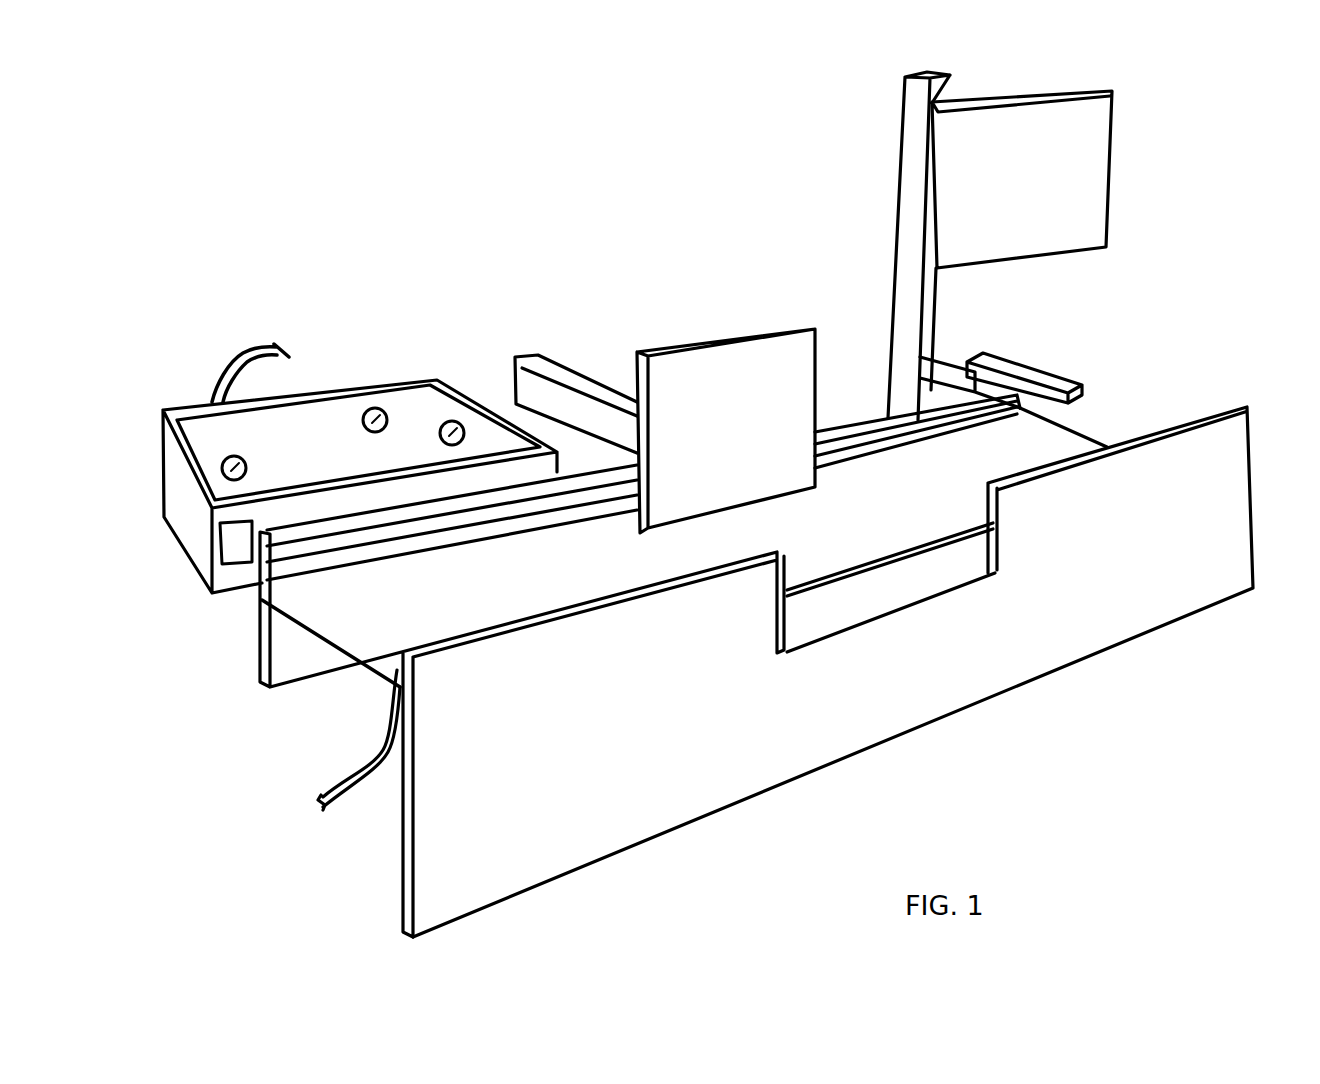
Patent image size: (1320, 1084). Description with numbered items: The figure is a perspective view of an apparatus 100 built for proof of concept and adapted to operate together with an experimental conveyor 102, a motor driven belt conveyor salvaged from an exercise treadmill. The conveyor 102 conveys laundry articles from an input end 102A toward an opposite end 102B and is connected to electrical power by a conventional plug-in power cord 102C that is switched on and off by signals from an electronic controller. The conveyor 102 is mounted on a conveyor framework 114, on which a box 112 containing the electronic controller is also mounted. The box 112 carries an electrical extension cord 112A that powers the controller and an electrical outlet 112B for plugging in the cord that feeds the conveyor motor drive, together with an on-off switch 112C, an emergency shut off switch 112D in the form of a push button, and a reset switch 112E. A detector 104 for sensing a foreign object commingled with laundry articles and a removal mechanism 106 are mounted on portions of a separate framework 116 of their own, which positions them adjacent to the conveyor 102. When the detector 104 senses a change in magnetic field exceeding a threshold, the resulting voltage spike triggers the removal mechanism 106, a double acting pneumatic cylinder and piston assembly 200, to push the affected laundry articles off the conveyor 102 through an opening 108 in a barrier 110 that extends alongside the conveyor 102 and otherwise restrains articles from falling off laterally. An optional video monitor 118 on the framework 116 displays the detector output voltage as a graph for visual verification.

The apparatus 100 is at (705, 322).
The experimental conveyor 102 is at (945, 503).
The input end 102A is at (1072, 442).
The opposite end 102B is at (370, 637).
The power cord 102C is at (333, 813).
The detector 104 is at (1007, 367).
The removal mechanism 106 is at (793, 350).
The opening 108 is at (987, 565).
The barrier 110 is at (1112, 578).
The box 112 is at (345, 457).
The electrical extension cord 112A is at (283, 352).
The electrical outlet 112B is at (232, 558).
The on-off switch 112C is at (233, 456).
The emergency shut off switch 112D is at (375, 408).
The reset switch 112E is at (452, 421).
The conveyor framework 114 is at (500, 723).
The framework 116 is at (858, 440).
The video monitor 118 is at (1045, 185).
The double acting pneumatic cylinder and piston assembly 200 is at (586, 382).